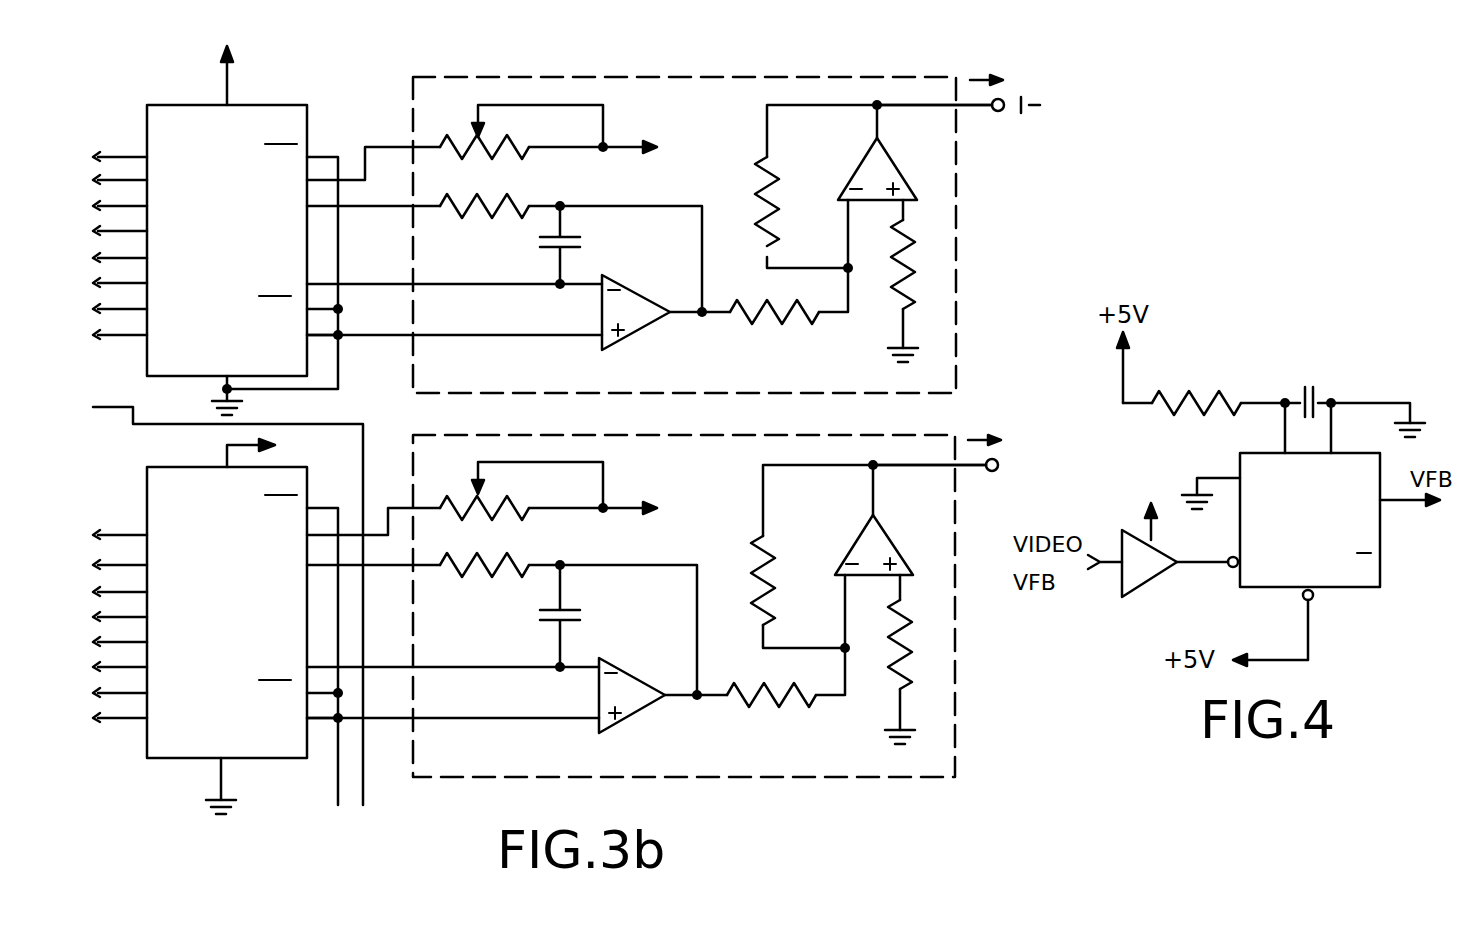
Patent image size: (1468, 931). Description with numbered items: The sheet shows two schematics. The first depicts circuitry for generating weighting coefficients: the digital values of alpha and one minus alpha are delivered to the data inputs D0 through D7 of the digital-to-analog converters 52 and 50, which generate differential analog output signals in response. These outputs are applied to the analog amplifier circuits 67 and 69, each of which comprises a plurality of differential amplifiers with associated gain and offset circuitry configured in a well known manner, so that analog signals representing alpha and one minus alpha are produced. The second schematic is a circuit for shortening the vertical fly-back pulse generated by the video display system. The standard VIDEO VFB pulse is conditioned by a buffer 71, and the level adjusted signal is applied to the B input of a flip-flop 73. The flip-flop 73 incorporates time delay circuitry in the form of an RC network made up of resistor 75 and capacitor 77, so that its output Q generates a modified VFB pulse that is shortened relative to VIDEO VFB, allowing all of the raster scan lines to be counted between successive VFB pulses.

In FIG. 3B, the digital-to-analog converter 50 is at (200, 105).
In FIG. 3B, the digital-to-analog converter 52 is at (200, 467).
In FIG. 3B, the analog amplifier circuit 67 is at (435, 77).
In FIG. 3B, the analog amplifier circuit 69 is at (692, 435).
In FIG. 4, the buffer 71 is at (1160, 577).
In FIG. 4, the flip-flop 73 is at (1380, 552).
In FIG. 4, the resistor 75 is at (1185, 400).
In FIG. 4, the capacitor 77 is at (1315, 398).